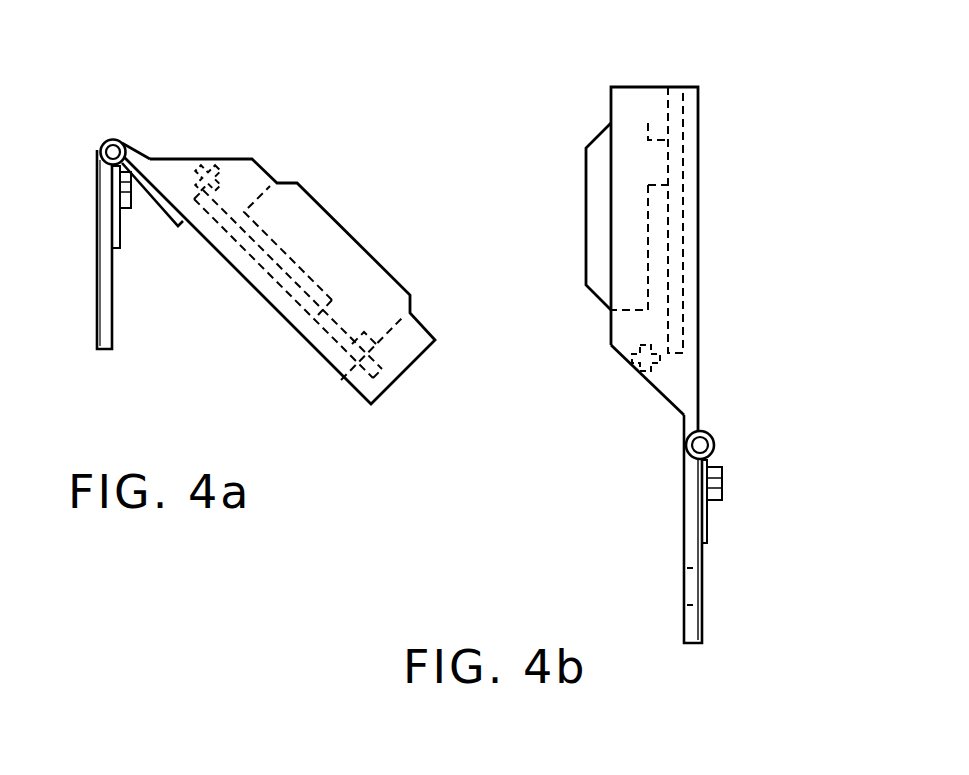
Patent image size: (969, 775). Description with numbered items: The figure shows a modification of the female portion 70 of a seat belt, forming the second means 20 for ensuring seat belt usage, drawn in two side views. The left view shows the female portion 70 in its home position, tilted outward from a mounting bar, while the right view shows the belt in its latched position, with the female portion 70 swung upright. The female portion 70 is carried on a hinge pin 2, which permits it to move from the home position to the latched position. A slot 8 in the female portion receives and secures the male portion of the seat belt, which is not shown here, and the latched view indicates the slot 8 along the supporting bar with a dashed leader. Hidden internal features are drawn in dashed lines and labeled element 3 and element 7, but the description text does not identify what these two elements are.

In FIG. 4a, the hinge pin 2 is at (111, 140).
In FIG. 4b, the hinge pin 2 is at (687, 449).
In FIG. 4a, the catch / latch member 3 is at (206, 160).
In FIG. 4b, the catch / latch member 3 is at (634, 368).
In FIG. 4a, the slide bar 7 is at (345, 382).
In FIG. 4b, the slide bar 7 is at (612, 123).
In FIG. 4b, the slot 8 is at (684, 588).
In FIG. 4a, the second means 20 is at (135, 127).
In FIG. 4b, the second means 20 is at (559, 206).
In FIG. 4a, the female portion 70 is at (317, 174).
In FIG. 4b, the female portion 70 is at (728, 252).